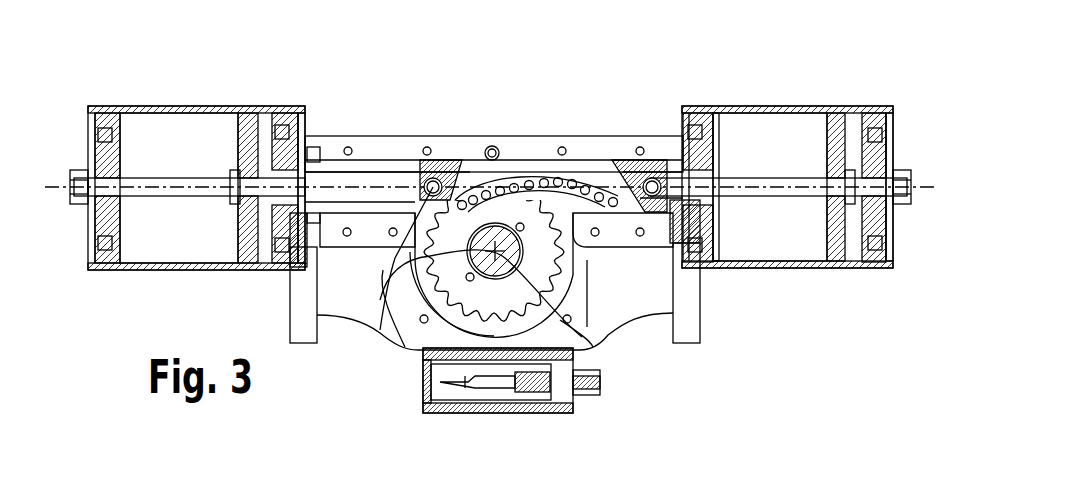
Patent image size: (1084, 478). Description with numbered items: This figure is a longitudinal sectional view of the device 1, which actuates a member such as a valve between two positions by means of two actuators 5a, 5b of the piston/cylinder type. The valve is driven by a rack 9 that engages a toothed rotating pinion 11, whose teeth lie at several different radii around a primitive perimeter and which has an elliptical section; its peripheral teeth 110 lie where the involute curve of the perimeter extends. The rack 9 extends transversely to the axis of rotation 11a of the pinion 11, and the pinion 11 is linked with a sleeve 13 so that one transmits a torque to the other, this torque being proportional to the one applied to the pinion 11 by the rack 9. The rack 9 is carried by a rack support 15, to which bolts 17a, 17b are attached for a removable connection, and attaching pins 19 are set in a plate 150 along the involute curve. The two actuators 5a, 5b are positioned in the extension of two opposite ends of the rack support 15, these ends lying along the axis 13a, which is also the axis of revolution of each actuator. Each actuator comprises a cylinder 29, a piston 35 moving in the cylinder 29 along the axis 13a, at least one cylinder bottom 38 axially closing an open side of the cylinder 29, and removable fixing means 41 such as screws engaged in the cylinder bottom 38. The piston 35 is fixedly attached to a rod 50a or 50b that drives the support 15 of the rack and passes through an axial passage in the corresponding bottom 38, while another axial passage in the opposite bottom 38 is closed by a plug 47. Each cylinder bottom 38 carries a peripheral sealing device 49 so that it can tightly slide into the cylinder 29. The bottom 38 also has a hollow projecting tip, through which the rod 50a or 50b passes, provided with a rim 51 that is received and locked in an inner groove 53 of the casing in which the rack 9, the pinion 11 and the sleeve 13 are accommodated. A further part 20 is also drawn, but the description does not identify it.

The device 1 is at (787, 343).
The actuator 5a is at (188, 148).
The actuator 5b is at (760, 146).
The rack 9 is at (572, 182).
The pinion 11 is at (435, 237).
The axis of rotation of the pinion 11a is at (512, 300).
The sleeve 13 is at (380, 300).
The axis 13a is at (916, 187).
The rack support 15 is at (600, 172).
The bolt 17a is at (433, 178).
The bolt 17b is at (652, 178).
The attaching pins 19 is at (462, 200).
The first cylinder 20 is at (127, 106).
The cylinder 29 is at (835, 106).
The piston 35 is at (812, 268).
The cylinder bottom 38 is at (95, 207).
The removable fixing means 41 is at (910, 122).
The plug 47 is at (70, 186).
The peripheral sealing device 49 is at (248, 106).
The rod 50a is at (380, 178).
The rod 50b is at (740, 177).
The rim 51 is at (305, 213).
The inner groove 53 is at (670, 227).
The peripheral teeth 110 is at (582, 337).
The plate 150 is at (578, 190).